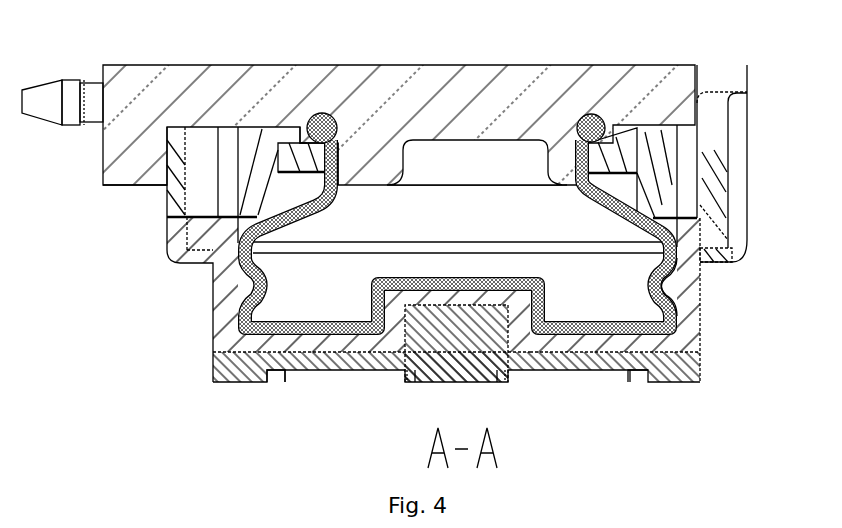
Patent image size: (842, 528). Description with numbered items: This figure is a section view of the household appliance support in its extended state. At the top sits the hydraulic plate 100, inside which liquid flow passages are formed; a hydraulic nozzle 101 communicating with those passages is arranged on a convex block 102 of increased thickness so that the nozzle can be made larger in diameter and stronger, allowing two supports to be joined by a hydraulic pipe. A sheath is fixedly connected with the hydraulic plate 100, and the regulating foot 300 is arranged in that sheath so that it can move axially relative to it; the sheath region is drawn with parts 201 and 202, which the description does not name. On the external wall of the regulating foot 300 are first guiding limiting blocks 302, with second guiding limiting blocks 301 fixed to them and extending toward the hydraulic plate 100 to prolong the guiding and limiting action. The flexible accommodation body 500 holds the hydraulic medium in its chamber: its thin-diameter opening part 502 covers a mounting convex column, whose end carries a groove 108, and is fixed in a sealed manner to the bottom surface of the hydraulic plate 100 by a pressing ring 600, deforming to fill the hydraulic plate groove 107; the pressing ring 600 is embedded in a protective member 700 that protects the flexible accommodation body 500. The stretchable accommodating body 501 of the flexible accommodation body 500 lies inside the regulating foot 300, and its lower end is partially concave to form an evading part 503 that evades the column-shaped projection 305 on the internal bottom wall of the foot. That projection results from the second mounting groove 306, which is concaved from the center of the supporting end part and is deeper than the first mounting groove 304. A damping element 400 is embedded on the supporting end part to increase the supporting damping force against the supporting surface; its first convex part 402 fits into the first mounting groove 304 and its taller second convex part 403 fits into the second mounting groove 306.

The hydraulic plate 100 is at (670, 82).
The hydraulic nozzle 101 is at (44, 85).
The convex block 102 is at (117, 167).
The hydraulic plate groove 107 is at (337, 122).
The groove 108 is at (428, 157).
The outer cover 201 is at (728, 207).
The cover protrusion 202 is at (720, 257).
The regulating foot 300 is at (223, 295).
The second guiding limiting block 301 is at (720, 176).
The first guiding limiting block 302 is at (197, 230).
The first mounting groove 304 is at (236, 353).
The column-shaped projection 305 is at (583, 345).
The second mounting groove 306 is at (403, 307).
The damping element 400 is at (690, 372).
The first convex part 402 is at (218, 370).
The second convex part 403 is at (517, 360).
The flexible accommodation body 500 is at (676, 318).
The accommodating body 501 is at (668, 268).
The opening part 502 is at (318, 114).
The evading part 503 is at (640, 372).
The pressing ring 600 is at (590, 146).
The protective member 700 is at (657, 185).